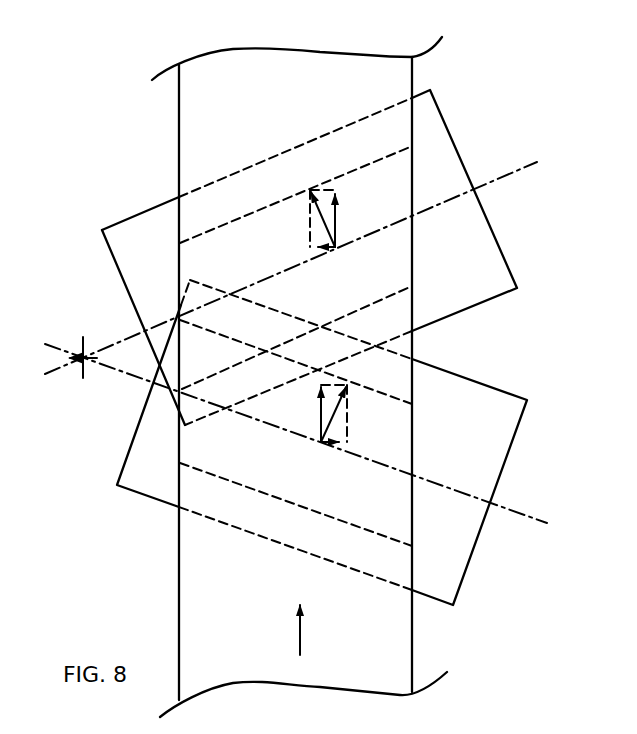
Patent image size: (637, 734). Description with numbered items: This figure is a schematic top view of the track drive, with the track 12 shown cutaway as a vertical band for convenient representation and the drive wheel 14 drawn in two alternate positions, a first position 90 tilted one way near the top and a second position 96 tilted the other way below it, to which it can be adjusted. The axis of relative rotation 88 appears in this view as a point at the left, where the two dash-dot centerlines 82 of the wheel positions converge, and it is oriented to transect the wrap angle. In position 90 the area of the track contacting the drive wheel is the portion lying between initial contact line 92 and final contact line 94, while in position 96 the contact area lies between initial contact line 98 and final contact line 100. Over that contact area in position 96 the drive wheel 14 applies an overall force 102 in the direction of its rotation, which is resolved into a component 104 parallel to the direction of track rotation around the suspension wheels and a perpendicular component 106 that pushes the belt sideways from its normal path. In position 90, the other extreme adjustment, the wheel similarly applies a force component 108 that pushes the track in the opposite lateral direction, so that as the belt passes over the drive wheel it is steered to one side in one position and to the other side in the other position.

The track 12 is at (413, 632).
The drive wheel 14 is at (290, 329).
The longitudinal axis of blank 82 is at (500, 178).
The axis of relative rotation 88 is at (88, 353).
The first drive wheel position 90 is at (127, 194).
The initial contact line 92 is at (379, 300).
The final contact line 94 is at (368, 169).
The second drive wheel position 96 is at (145, 548).
The initial contact line 98 is at (374, 530).
The final contact line 100 is at (377, 391).
The overall force 102 is at (335, 234).
The force component parallel to track rotation 104 is at (335, 234).
The perpendicular force component 106 is at (326, 445).
The force component 108 is at (327, 250).